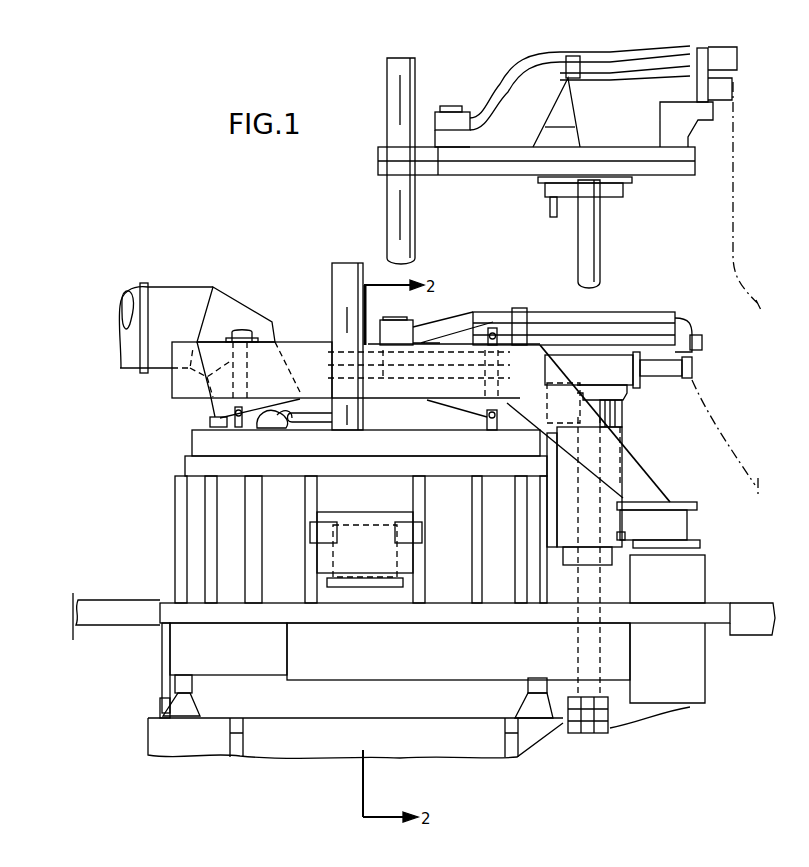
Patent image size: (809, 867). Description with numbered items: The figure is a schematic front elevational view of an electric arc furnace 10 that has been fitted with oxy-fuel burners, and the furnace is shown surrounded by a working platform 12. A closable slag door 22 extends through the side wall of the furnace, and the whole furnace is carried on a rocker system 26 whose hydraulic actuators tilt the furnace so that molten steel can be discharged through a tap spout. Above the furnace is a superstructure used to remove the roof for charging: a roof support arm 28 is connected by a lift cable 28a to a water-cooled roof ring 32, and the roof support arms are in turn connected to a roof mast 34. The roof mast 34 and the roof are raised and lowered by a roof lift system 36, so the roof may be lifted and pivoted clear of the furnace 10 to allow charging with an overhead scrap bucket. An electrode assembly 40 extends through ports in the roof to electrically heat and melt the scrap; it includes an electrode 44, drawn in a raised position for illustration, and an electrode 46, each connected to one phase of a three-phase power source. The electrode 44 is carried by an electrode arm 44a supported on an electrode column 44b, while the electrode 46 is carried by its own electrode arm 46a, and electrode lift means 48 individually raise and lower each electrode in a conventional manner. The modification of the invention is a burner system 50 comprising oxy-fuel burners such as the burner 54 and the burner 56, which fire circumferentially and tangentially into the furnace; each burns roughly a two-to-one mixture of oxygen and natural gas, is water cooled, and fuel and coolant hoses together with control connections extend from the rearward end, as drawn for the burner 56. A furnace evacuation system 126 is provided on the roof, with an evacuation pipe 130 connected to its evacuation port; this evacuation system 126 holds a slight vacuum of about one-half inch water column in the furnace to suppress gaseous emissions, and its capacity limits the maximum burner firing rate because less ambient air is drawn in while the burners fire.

The electric arc furnace 10 is at (722, 527).
The working platform 12 is at (708, 610).
The closable slag door 22 is at (352, 525).
The rocker system 26 is at (188, 700).
The roof support arm 28 is at (183, 388).
The lift cable 28a is at (232, 413).
The water-cooled roof ring 32 is at (190, 447).
The roof mast 34 is at (633, 480).
The roof lift system 36 is at (695, 684).
The electrode assembly 40 is at (338, 225).
The electrode 44 is at (412, 203).
The electrode arm 44a is at (668, 168).
The electrode column 44b is at (600, 232).
The electrode 46 is at (345, 273).
The electrode arm 46a is at (627, 387).
The electrode lift means 48 is at (570, 475).
The burner system 50 is at (312, 436).
The oxy-fuel burner 54 is at (518, 345).
The oxy-fuel burner 56 is at (270, 430).
The furnace evacuation system 126 is at (310, 386).
The evacuation pipe 130 is at (219, 308).